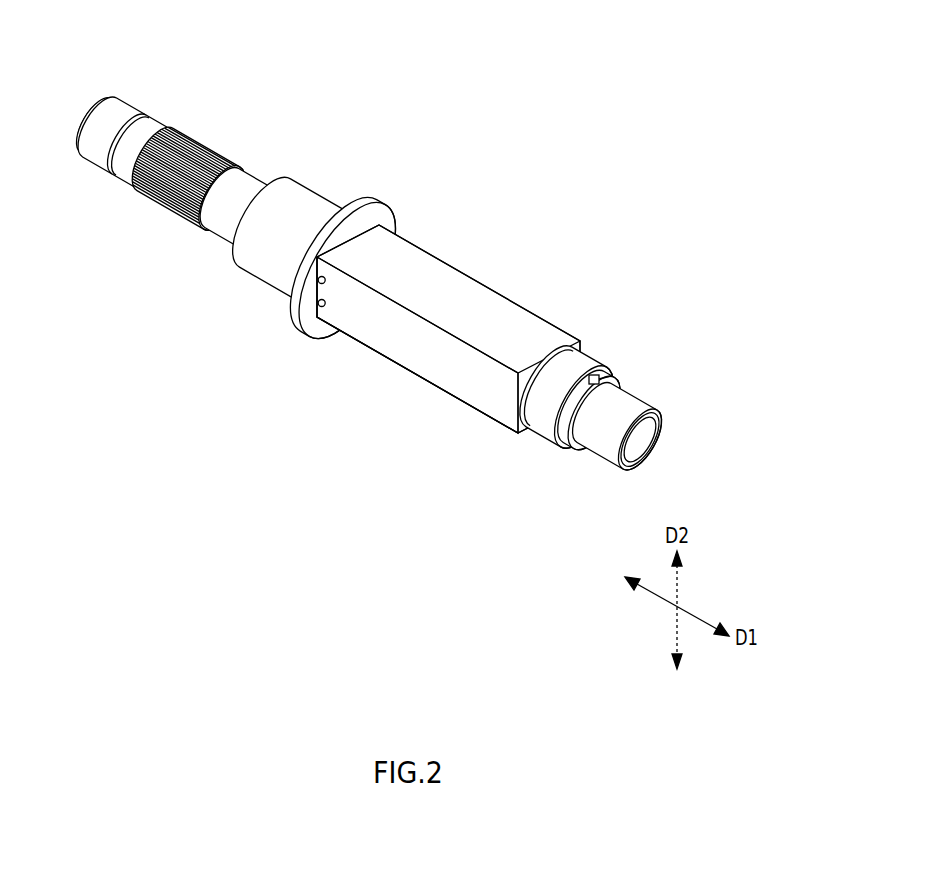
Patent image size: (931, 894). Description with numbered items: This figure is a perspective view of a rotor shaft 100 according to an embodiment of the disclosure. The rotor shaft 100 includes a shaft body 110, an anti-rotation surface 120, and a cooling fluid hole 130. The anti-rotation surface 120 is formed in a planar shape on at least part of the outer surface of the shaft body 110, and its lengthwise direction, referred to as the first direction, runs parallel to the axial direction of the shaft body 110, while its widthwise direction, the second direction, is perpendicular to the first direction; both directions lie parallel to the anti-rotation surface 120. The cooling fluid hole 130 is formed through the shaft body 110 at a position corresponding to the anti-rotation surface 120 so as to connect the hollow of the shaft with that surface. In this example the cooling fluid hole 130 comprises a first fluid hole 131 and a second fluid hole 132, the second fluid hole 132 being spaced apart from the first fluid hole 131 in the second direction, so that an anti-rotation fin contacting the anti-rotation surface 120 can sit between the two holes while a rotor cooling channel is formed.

The rotor shaft 100 is at (361, 275).
The shaft body 110 is at (437, 268).
The anti-rotation surface 120 is at (475, 370).
The cooling fluid hole 130 is at (419, 414).
The first fluid hole 131 is at (327, 285).
The second fluid hole 132 is at (327, 307).